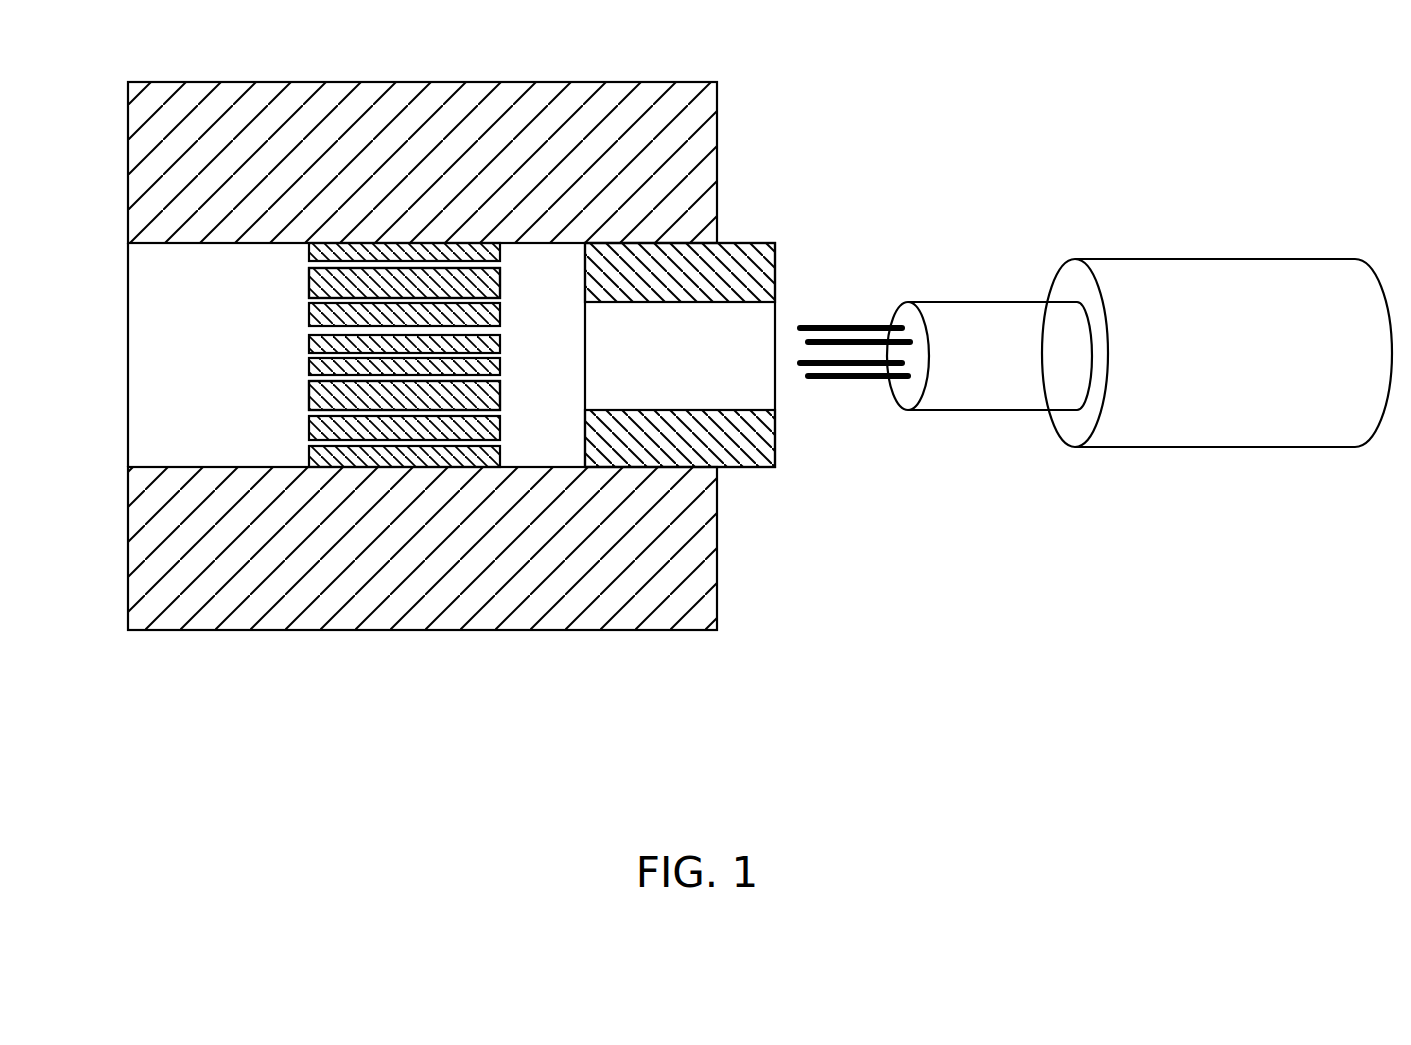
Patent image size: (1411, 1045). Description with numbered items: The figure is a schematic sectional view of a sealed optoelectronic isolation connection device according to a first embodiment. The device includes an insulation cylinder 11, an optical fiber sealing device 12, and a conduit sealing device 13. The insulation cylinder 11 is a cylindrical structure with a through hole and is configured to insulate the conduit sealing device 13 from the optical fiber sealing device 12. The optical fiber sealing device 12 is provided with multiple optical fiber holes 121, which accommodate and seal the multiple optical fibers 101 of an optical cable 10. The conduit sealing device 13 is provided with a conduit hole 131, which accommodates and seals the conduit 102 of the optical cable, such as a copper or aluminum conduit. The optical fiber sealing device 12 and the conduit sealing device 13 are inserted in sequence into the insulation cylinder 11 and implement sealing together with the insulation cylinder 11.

The optical cable 10 is at (1150, 496).
The optical fibers 101 is at (852, 328).
The conduit 102 is at (982, 328).
The insulation cylinder 11 is at (260, 538).
The optical fiber sealing device 12 is at (310, 348).
The optical fiber holes 121 is at (318, 447).
The conduit sealing device 13 is at (750, 467).
The conduit hole 131 is at (680, 358).